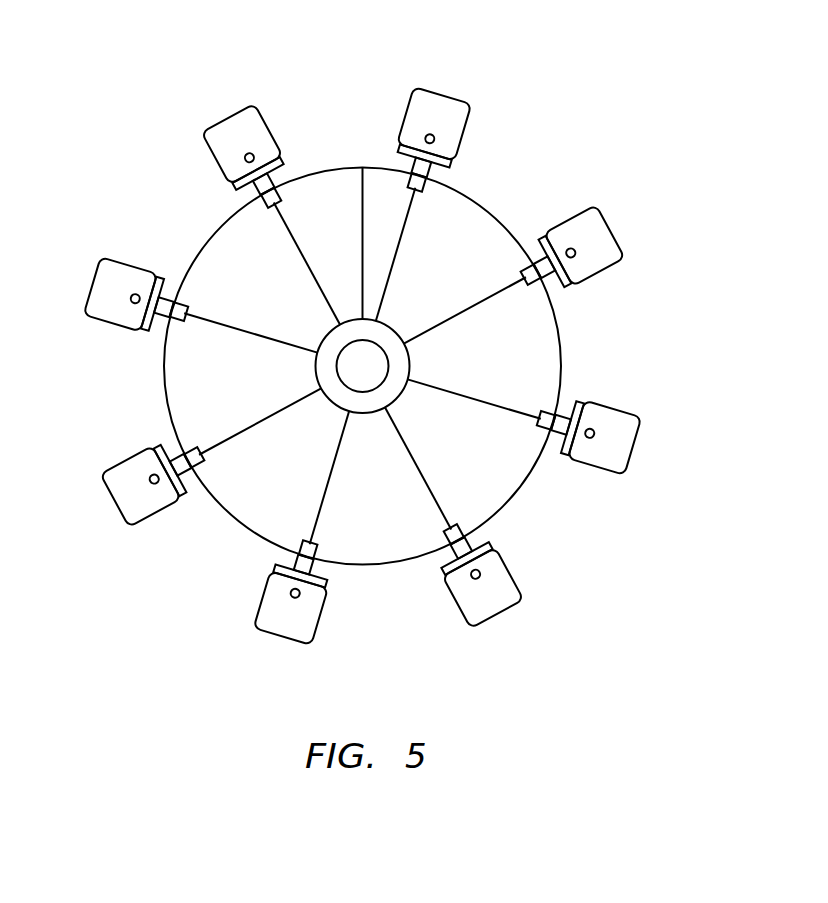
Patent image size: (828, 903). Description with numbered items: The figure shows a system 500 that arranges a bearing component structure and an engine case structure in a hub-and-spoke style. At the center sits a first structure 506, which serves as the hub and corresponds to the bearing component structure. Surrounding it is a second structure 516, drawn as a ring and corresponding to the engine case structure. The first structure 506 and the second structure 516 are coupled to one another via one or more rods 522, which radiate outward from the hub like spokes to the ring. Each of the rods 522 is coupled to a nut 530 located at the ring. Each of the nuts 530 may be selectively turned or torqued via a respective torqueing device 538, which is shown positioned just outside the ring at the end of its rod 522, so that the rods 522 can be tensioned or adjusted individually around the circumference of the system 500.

The system 500 is at (610, 88).
The first structure 506 is at (395, 323).
The second structure 516 is at (558, 326).
The rod 522 is at (302, 257).
The nut 530 is at (150, 332).
The torqueing device 538 is at (97, 287).